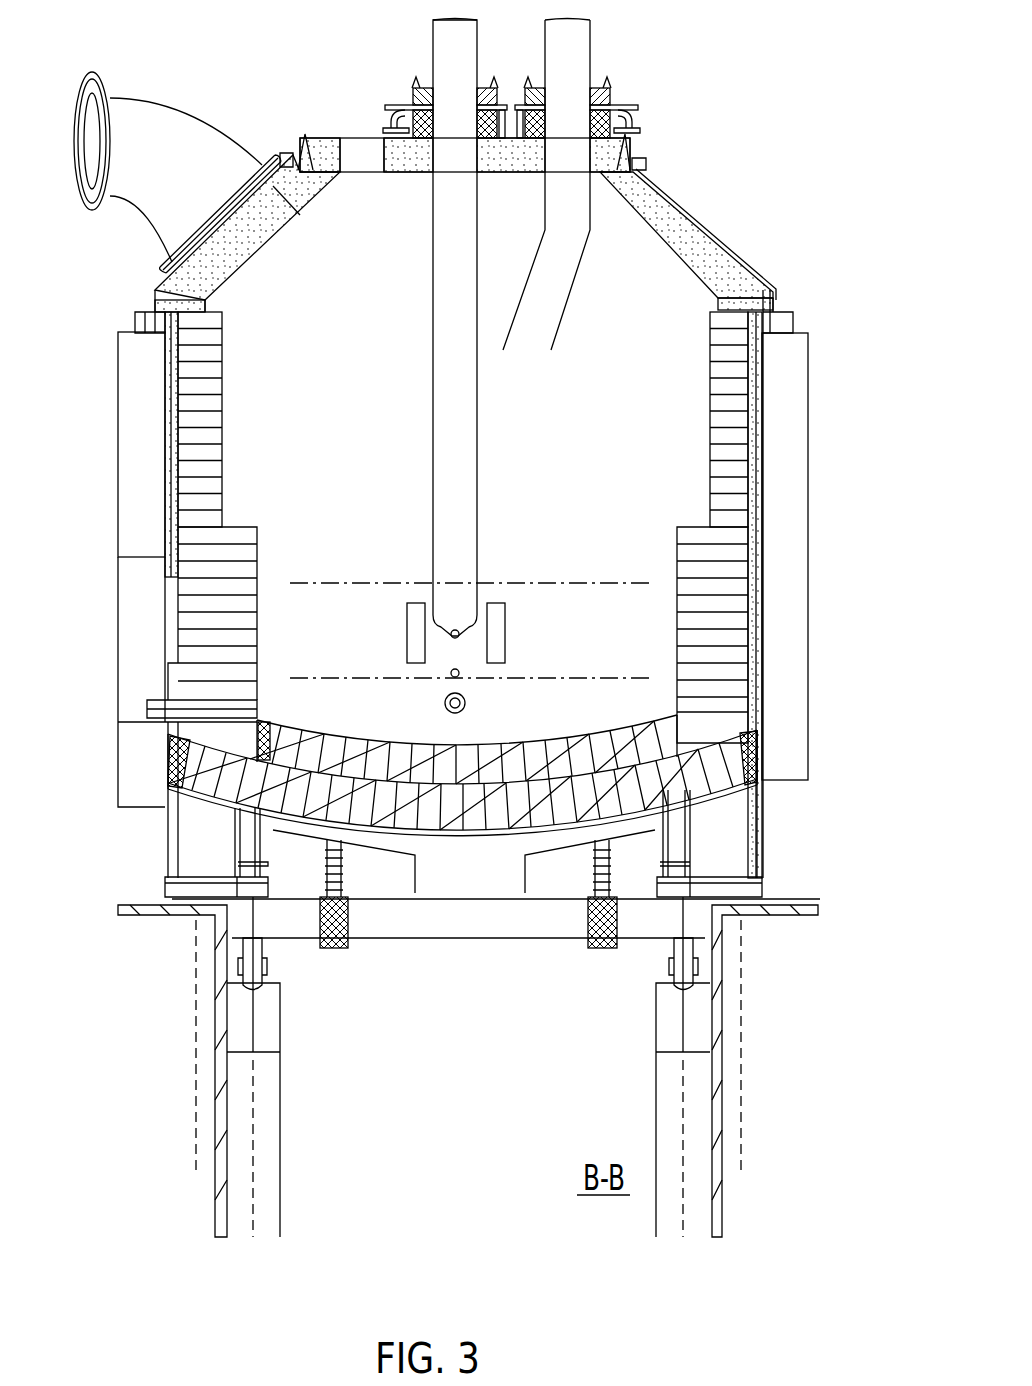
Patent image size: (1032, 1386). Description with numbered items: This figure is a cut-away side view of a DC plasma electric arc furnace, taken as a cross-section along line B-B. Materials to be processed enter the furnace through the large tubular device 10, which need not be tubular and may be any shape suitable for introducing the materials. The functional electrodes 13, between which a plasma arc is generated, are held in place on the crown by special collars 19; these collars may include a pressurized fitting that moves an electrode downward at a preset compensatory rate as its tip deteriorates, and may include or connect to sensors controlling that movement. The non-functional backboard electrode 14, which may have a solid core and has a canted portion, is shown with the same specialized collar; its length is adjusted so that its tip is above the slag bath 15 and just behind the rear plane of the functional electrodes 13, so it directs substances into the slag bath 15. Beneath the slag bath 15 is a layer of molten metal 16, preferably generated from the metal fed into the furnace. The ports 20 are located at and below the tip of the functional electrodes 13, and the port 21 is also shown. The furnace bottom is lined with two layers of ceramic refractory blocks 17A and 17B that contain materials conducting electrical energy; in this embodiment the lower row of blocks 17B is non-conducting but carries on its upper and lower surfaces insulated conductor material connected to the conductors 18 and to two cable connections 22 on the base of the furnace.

The tubular device 10 is at (136, 72).
The functional electrodes 13 is at (430, 212).
The backboard electrode 14 is at (588, 303).
The slag bath 15 is at (620, 615).
The molten metal layer 16 is at (620, 700).
The upper layer of refractory blocks 17A is at (605, 762).
The lower row of refractory blocks 17B is at (605, 797).
The conductors 18 is at (685, 725).
The collars 19 is at (395, 93).
The ports 20 is at (443, 634).
The port 21 is at (437, 703).
The cable connections 22 is at (292, 1103).